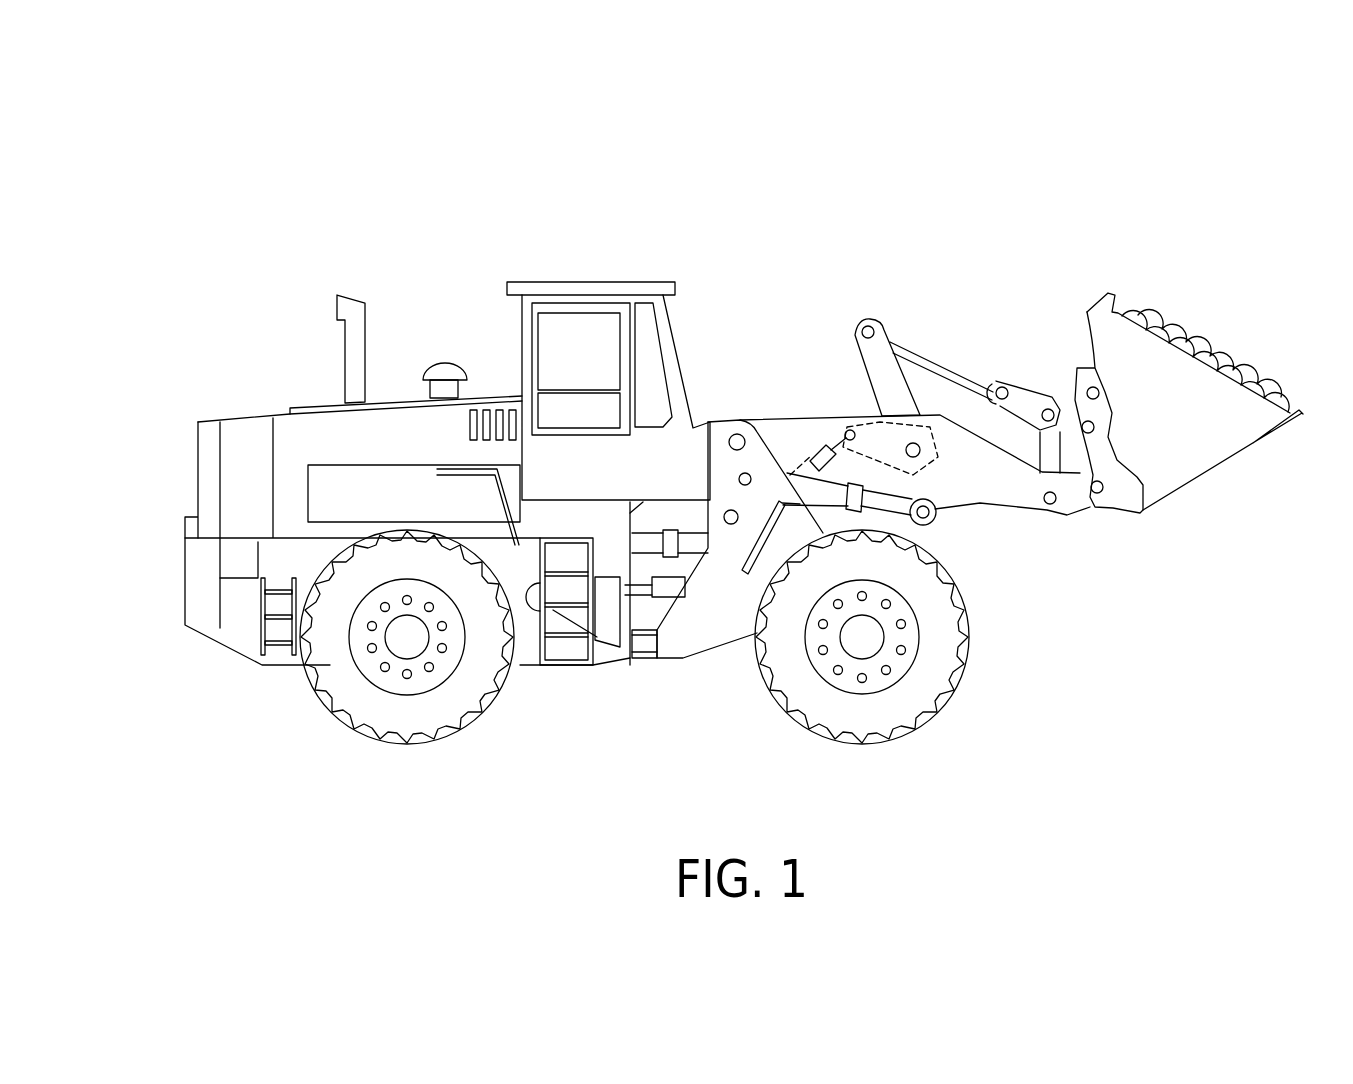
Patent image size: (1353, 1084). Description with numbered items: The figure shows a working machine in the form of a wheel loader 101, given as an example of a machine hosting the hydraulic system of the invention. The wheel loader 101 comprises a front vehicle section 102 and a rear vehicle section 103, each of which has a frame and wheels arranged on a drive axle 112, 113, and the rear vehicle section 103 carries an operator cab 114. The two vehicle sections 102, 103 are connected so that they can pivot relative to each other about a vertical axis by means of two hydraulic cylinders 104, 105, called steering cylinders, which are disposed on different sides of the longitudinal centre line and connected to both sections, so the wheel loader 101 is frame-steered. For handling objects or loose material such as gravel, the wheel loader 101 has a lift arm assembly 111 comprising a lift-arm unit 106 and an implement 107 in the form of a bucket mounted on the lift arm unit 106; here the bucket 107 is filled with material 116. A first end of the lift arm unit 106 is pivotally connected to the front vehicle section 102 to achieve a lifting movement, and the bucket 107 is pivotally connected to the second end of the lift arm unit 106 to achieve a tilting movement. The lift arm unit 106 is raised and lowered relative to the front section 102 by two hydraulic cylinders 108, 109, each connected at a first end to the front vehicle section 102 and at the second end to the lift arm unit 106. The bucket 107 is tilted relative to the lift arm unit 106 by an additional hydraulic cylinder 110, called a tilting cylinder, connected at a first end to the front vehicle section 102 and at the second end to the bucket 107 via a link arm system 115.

The wheel loader 101 is at (493, 187).
The front vehicle section 102 is at (690, 628).
The rear vehicle section 103 is at (240, 623).
The hydraulic cylinder 104 is at (693, 543).
The hydraulic cylinder 105 is at (583, 652).
The lift-arm unit 106 is at (1068, 500).
The implement 107 is at (1173, 453).
The hydraulic cylinder 108 is at (892, 508).
The hydraulic cylinder 109 is at (1021, 490).
The hydraulic cylinder 110 is at (832, 447).
The lift arm assembly 111 is at (1022, 272).
The drive axle 112 is at (402, 638).
The drive axle 113 is at (868, 635).
The operator cab 114 is at (587, 287).
The link arm system 115 is at (938, 352).
The material 116 is at (1200, 347).